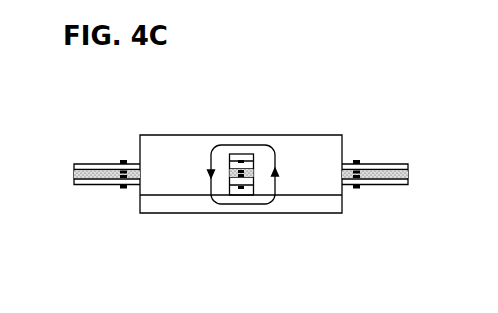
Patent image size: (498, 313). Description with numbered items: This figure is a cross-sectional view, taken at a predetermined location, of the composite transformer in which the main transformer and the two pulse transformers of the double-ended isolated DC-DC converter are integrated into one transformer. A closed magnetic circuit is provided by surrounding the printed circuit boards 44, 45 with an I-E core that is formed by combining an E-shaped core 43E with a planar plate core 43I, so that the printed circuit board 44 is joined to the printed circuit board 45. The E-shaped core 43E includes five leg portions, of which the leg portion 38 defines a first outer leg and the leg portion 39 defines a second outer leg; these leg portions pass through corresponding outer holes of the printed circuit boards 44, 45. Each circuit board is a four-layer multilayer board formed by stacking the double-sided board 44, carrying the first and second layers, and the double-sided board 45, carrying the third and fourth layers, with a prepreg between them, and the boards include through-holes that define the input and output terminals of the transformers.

The leg portion 38 is at (175, 163).
The leg portion 39 is at (313, 165).
The E-shaped core 43E is at (205, 142).
The planar plate core 43I is at (284, 208).
The printed circuit board 44 is at (80, 166).
The printed circuit board 45 is at (80, 186).